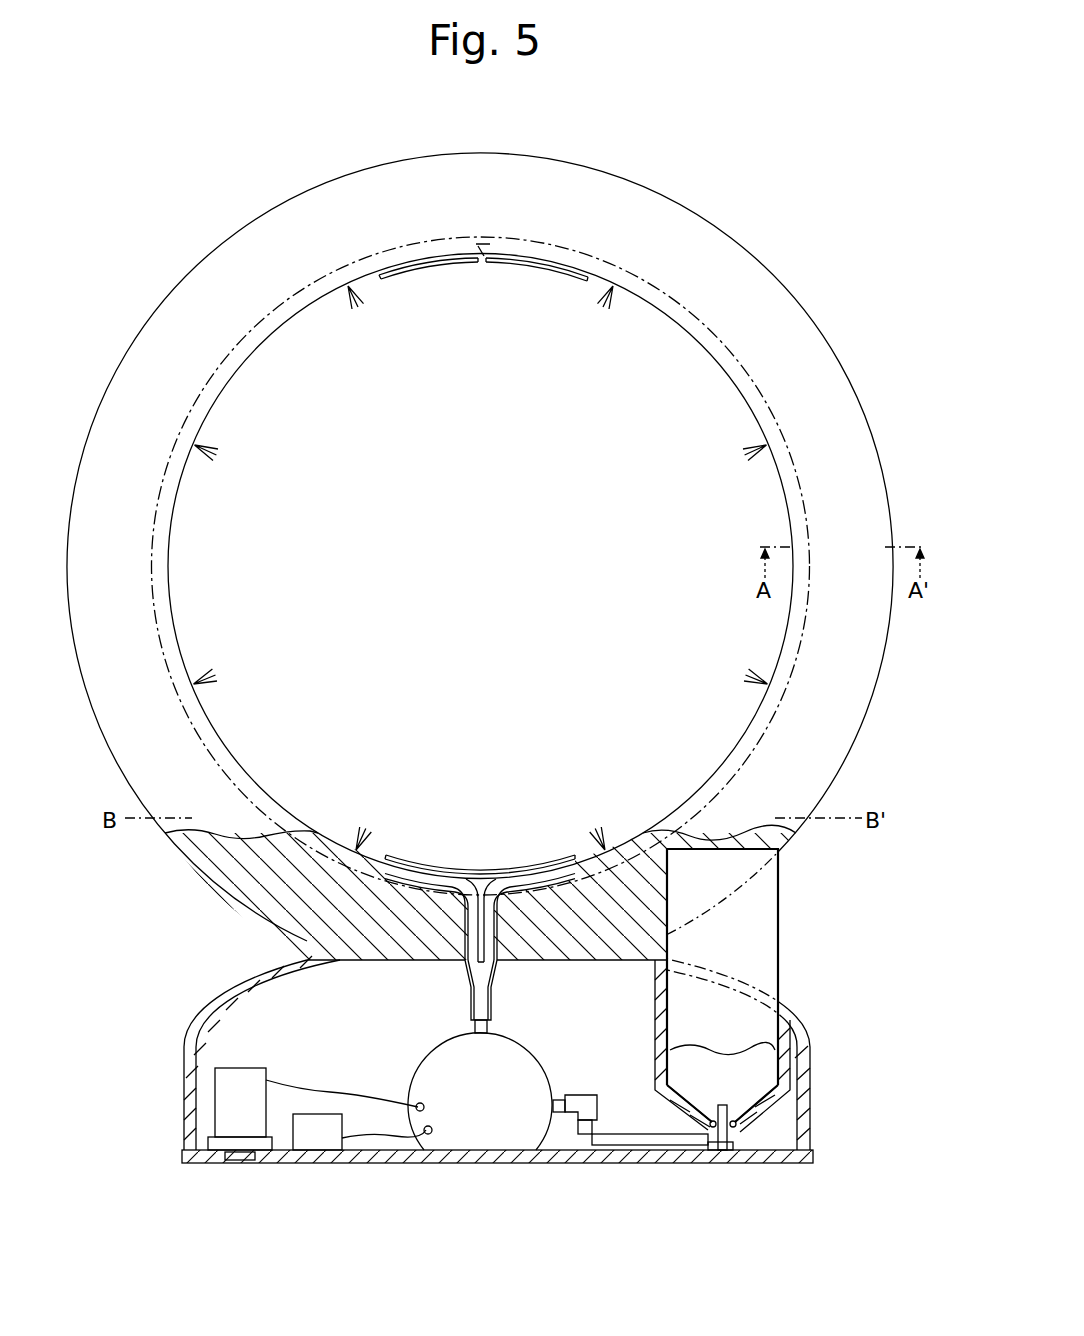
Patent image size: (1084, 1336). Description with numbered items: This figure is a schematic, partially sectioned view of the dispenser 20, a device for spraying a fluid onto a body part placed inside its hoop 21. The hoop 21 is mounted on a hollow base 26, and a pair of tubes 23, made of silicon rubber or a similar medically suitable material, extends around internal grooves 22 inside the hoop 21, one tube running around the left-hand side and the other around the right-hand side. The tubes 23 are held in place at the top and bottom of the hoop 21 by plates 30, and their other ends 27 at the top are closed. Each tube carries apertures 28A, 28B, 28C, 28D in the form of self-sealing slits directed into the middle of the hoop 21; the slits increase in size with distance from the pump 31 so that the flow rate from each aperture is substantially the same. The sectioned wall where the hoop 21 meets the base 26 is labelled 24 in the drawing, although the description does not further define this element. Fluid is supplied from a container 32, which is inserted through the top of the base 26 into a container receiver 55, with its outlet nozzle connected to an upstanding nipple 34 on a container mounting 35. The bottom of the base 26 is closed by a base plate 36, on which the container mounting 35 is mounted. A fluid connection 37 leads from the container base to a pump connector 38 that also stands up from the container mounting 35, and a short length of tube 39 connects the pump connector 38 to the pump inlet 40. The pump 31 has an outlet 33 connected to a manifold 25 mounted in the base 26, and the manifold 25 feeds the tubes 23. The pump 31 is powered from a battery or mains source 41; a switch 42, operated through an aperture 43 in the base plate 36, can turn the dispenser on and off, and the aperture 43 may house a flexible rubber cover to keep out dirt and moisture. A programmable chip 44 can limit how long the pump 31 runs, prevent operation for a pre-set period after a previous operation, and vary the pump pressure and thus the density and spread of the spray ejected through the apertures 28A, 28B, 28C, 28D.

The dispenser 20 is at (746, 240).
The hoop 21 is at (830, 380).
The internal grooves 22 is at (800, 640).
The tubes 23 is at (448, 880).
The base 24 is at (305, 946).
The manifold 25 is at (470, 985).
The base 26 is at (808, 1062).
The other ends of the tubes 27 is at (482, 244).
The aperture 28A is at (355, 842).
The aperture 28B is at (210, 690).
The aperture 28C is at (202, 447).
The aperture 28D is at (347, 292).
The plates 30 is at (412, 266).
The pump 31 is at (455, 1108).
The container 32 is at (782, 926).
The outlet 33 is at (494, 1032).
The upstanding nipple 34 is at (720, 1130).
The container mounting 35 is at (685, 1160).
The base plate 36 is at (372, 1162).
The fluid connection 37 is at (640, 1146).
The pump connector 38 is at (582, 1140).
The short length of tube 39 is at (582, 1100).
The pump inlet 40 is at (560, 1112).
The battery or mains source 41 is at (230, 1092).
The switch 42 is at (238, 1160).
The aperture 43 is at (226, 1162).
The programmable chip 44 is at (315, 1135).
The container receiver 55 is at (783, 1052).